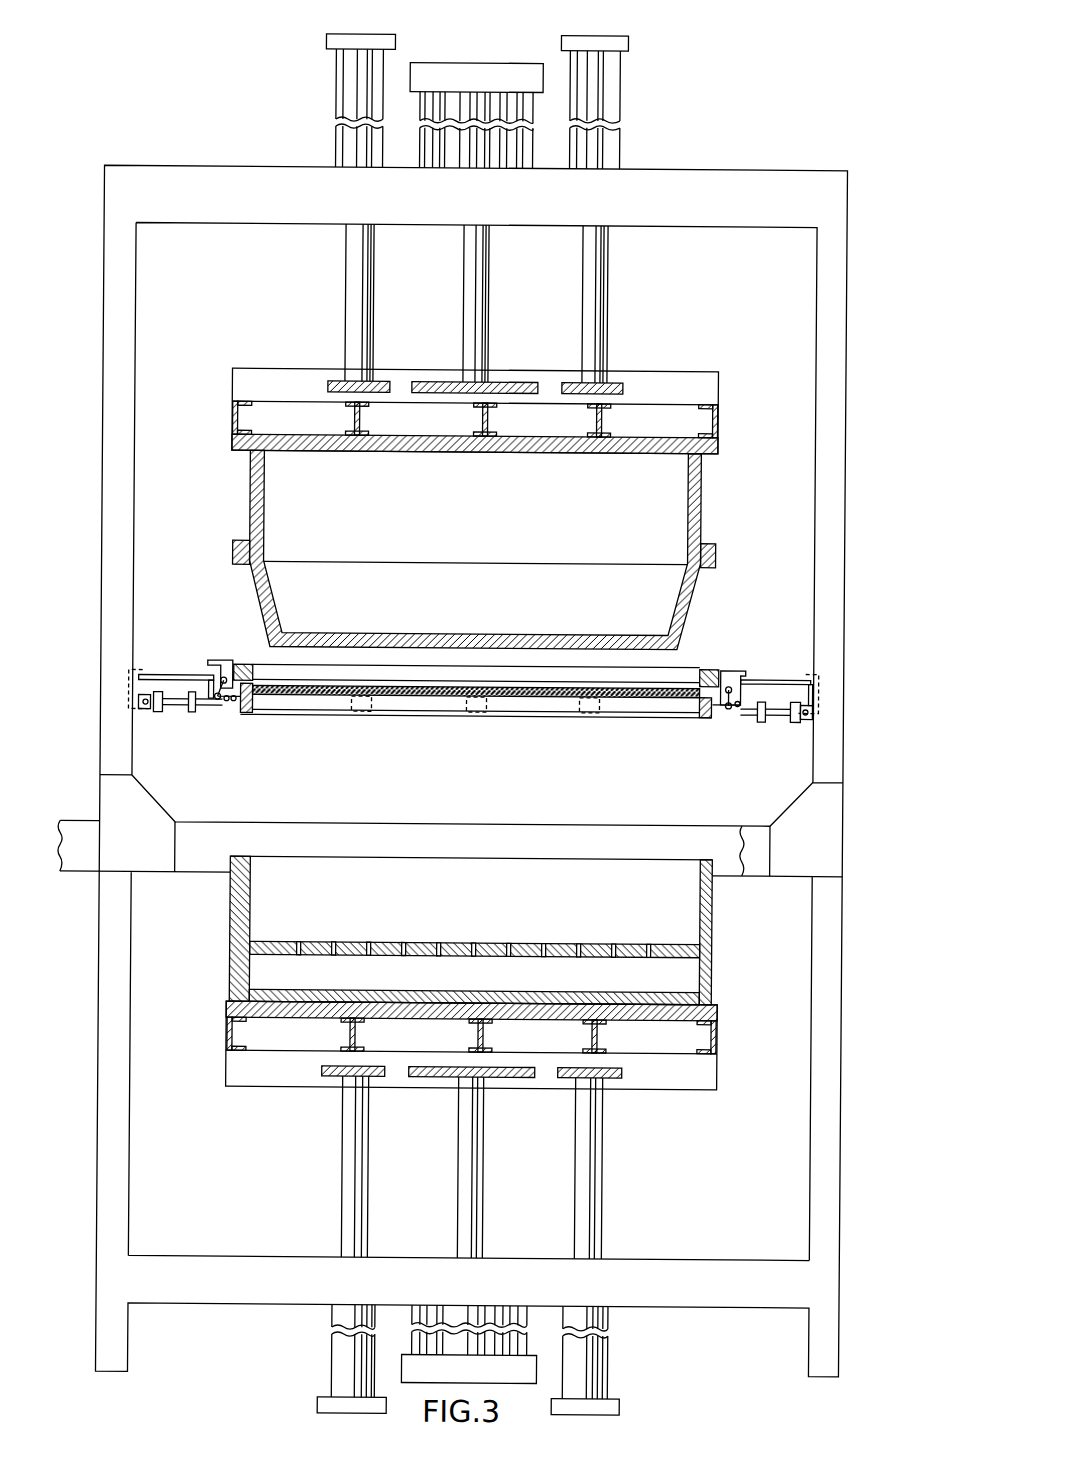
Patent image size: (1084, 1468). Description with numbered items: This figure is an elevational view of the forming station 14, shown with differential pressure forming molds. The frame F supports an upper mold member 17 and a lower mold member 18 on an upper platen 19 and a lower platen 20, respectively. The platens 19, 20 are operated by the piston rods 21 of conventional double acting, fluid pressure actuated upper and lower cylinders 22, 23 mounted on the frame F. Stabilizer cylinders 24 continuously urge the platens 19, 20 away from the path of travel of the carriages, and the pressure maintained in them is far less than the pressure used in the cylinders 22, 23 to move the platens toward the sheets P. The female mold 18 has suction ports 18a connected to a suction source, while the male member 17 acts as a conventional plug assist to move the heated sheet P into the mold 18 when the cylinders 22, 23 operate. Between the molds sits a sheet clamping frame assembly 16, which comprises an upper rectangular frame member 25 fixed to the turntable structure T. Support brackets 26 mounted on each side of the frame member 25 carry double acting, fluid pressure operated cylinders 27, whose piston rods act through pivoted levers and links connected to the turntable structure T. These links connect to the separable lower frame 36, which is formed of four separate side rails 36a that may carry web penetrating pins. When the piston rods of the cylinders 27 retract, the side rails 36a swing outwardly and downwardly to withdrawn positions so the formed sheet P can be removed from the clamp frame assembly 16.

The forming station 14 is at (701, 168).
The frame F is at (451, 732).
The sheet clamping frame assembly 16 is at (710, 650).
The upper mold member 17 is at (700, 520).
The lower mold member 18 is at (500, 930).
The suction ports 18a is at (546, 943).
The upper platen 19 is at (648, 385).
The lower platen 20 is at (692, 1078).
The piston rods 21 is at (485, 342).
The upper cylinder 22 is at (450, 72).
The lower cylinder 23 is at (503, 1306).
The stabilizer cylinders 24 is at (338, 146).
The upper rectangular frame member 25 is at (240, 666).
The support brackets 26 is at (169, 676).
The cylinders 27 is at (186, 713).
The separable lower frame 36 is at (476, 724).
The side rails 36a is at (258, 708).
The sheet P is at (535, 678).
The turntable structure T is at (214, 660).